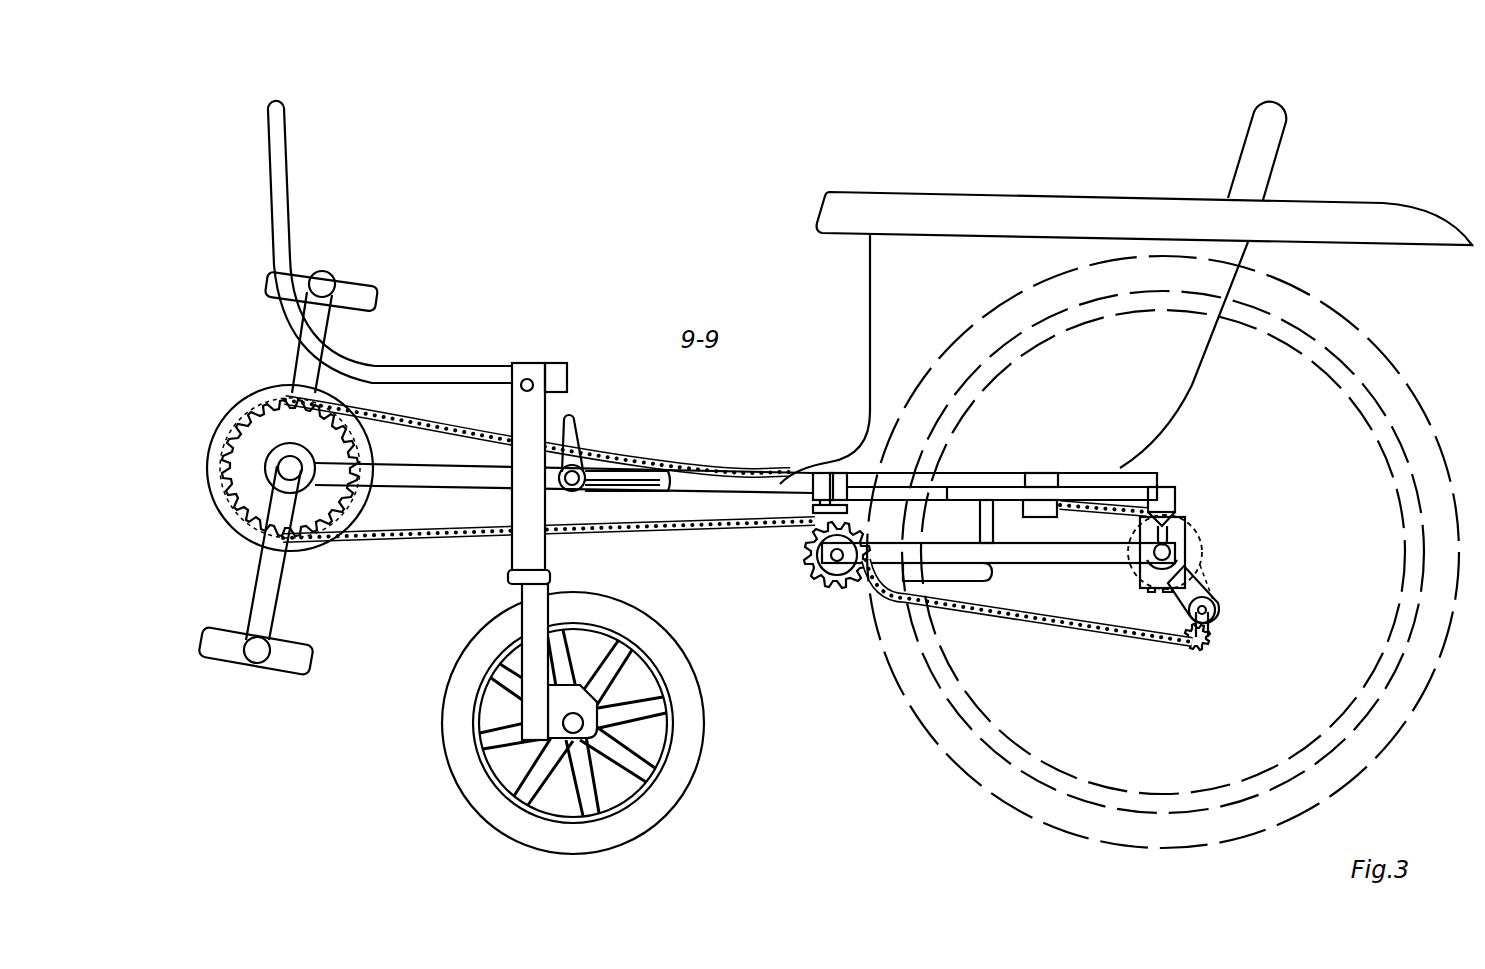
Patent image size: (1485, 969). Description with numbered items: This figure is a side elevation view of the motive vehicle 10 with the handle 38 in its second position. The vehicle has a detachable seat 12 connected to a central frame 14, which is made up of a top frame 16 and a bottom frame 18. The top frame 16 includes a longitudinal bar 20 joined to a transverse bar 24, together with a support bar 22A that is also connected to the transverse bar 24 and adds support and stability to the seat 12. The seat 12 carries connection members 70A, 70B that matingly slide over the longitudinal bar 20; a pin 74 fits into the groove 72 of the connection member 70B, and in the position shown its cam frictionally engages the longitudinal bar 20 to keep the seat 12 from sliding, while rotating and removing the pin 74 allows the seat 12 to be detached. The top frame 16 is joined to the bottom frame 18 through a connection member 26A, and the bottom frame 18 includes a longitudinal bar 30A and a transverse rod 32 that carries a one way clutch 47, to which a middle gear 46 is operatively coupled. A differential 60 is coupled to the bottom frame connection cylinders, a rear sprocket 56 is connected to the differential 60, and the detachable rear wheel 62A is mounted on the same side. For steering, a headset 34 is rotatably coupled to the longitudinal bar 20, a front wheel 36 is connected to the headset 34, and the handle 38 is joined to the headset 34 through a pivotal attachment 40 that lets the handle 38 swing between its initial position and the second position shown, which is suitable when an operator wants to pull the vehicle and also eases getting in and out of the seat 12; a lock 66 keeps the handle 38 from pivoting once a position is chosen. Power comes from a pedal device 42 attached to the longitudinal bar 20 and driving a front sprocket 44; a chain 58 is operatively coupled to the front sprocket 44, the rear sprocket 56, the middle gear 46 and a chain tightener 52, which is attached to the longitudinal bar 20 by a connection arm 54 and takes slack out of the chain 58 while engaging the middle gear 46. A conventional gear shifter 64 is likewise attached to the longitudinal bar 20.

The motive vehicle 10 is at (236, 280).
The seat 12 is at (1292, 100).
The central frame 14 is at (688, 494).
The top frame 16 is at (1068, 500).
The bottom frame 18 is at (998, 585).
The longitudinal bar 20 is at (452, 464).
The support bar 22A is at (1080, 488).
The transverse bar 24 is at (1165, 496).
The connection member 26A is at (1160, 519).
The longitudinal bar 30A is at (1033, 560).
The transverse rod 32 is at (836, 562).
The headset 34 is at (518, 498).
The front wheel 36 is at (660, 812).
The handle 38 is at (280, 100).
The pivotal attachment 40 is at (527, 378).
The pedal device 42 is at (258, 574).
The front sprocket 44 is at (232, 441).
The middle gear 46 is at (804, 562).
The one way clutch 47 is at (815, 533).
The chain tightener 52 is at (892, 605).
The connection arm 54 is at (947, 577).
The rear sprocket 56 is at (1203, 555).
The chain 58 is at (447, 541).
The differential 60 is at (1180, 538).
The rear wheel 62A is at (1352, 322).
The gear shifter 64 is at (575, 417).
The lock 66 is at (560, 372).
The connection member 70A is at (1038, 478).
The connection member 70B is at (784, 476).
The groove 72 is at (808, 507).
The pin 74 is at (842, 500).